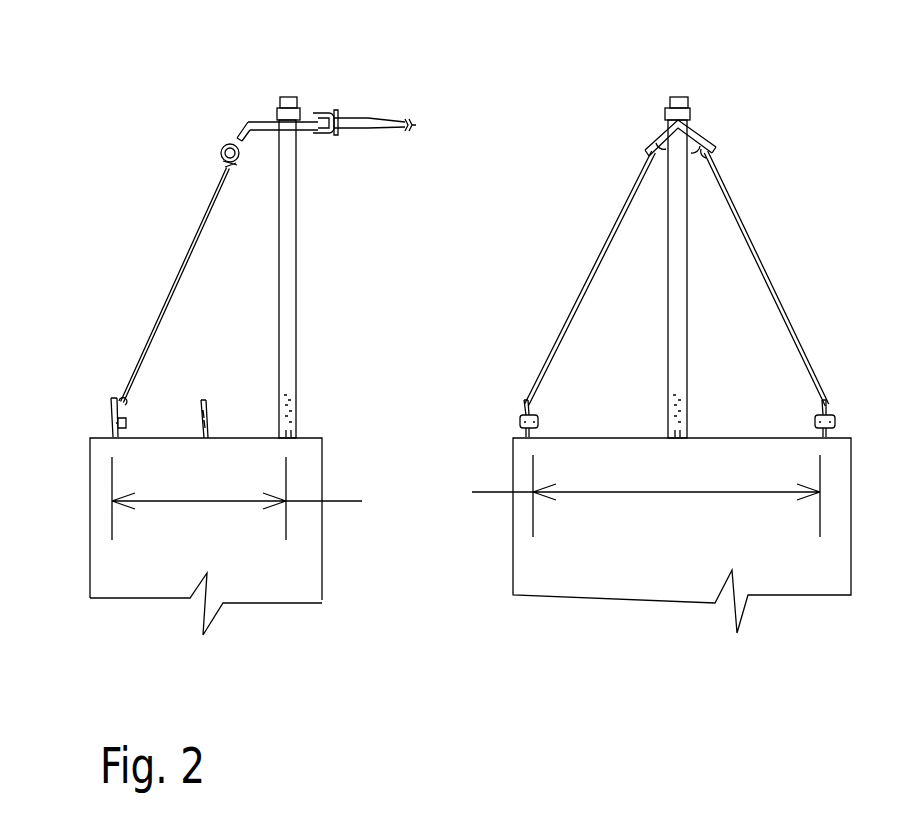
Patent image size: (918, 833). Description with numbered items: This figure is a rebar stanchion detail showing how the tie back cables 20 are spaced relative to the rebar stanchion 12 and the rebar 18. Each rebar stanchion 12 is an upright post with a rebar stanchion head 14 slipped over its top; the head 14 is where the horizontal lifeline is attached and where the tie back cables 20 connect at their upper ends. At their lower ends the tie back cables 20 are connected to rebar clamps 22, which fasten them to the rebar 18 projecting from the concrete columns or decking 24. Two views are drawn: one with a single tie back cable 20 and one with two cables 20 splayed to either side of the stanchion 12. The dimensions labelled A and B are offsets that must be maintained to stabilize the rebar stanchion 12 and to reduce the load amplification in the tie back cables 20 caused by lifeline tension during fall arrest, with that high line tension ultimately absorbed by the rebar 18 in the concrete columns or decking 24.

The rebar stanchion 12 is at (297, 298).
The rebar stanchion head 14 is at (277, 120).
The rebar 18 is at (110, 403).
The tie back cable 20 is at (165, 299).
The rebar clamp 22 is at (520, 422).
The concrete columns or decking 24 is at (322, 572).